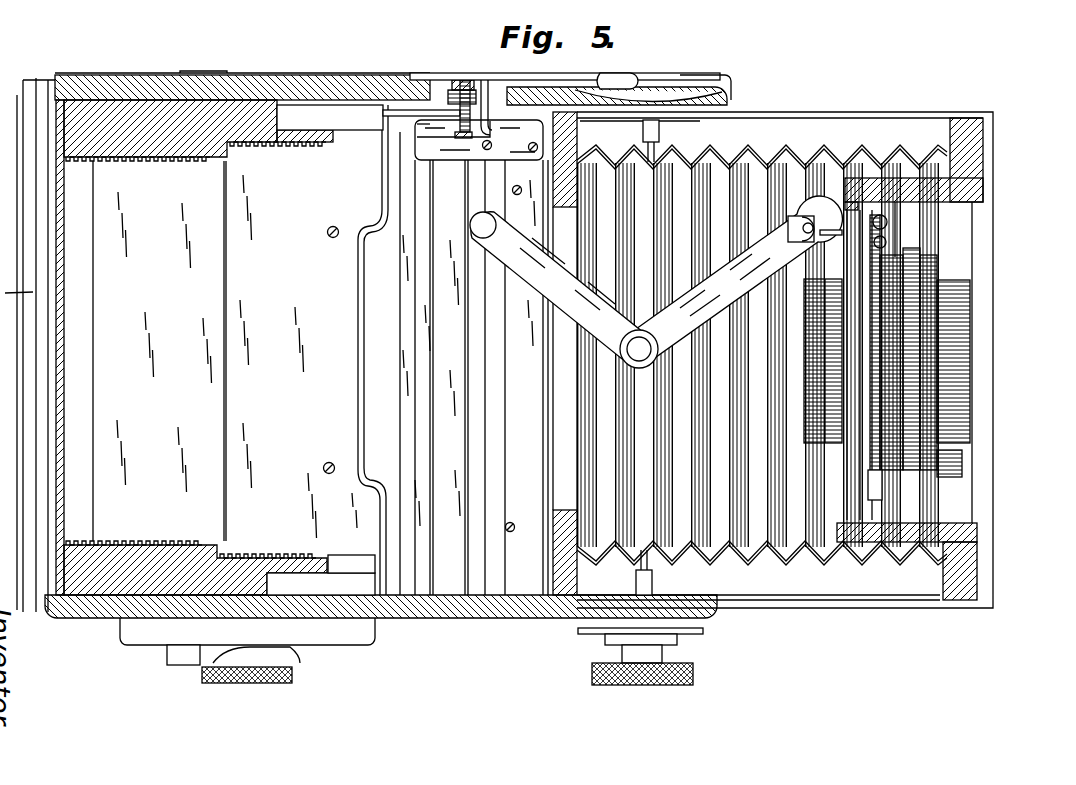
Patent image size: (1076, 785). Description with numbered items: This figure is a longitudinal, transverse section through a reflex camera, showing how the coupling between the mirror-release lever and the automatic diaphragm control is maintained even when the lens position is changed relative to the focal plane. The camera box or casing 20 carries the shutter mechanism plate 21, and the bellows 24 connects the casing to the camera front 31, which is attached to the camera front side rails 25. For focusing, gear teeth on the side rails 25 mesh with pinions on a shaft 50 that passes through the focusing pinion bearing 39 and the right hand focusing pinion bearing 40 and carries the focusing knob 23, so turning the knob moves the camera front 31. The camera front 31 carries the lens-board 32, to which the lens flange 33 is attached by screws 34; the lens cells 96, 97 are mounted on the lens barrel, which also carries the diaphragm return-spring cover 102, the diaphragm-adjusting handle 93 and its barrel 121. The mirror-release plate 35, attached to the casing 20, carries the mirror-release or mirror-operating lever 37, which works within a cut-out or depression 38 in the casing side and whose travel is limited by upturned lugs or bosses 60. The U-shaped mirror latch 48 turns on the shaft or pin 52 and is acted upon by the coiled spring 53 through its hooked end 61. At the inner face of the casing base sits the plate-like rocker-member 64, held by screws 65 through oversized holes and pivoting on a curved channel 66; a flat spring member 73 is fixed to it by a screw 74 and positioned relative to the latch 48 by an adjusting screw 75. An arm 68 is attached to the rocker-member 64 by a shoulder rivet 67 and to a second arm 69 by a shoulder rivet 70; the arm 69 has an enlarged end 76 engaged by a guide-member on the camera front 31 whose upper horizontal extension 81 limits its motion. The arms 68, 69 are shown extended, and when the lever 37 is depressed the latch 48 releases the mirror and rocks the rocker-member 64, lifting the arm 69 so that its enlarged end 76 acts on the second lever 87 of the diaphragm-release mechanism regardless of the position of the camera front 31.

The camera box or casing 20 is at (290, 82).
The shutter mechanism plate 21 is at (345, 637).
The focusing knob 23 is at (695, 676).
The bellows 24 is at (752, 568).
The camera front side rails 25 is at (884, 118).
The camera front 31 is at (990, 152).
The lens-board 32 is at (860, 516).
The lens flange 33 is at (897, 212).
The screws 34 is at (888, 240).
The mirror-release plate 35 is at (475, 90).
The mirror-release or mirror-operating lever 37 is at (625, 85).
The cut-out or depression 38 is at (650, 100).
The focusing pinion bearing 39 is at (700, 88).
The right hand focusing pinion bearing 40 is at (700, 633).
The mirror latch 48 is at (418, 137).
The shaft 50 is at (660, 152).
The shaft or pin 52 is at (440, 116).
The coiled spring 53 is at (455, 100).
The upturned lugs or bosses 60 is at (568, 88).
The hooked end 61 is at (500, 100).
The rocker-member 64 is at (490, 331).
The screws 65 is at (513, 188).
The curved channel 66 is at (505, 468).
The shoulder rivet 67 is at (483, 233).
The arm 68 is at (567, 300).
The second arm 69 is at (757, 285).
The shoulder rivet 70 is at (640, 352).
The flat spring member 73 is at (420, 152).
The screw 74 is at (478, 163).
The adjusting screw 75 is at (510, 137).
The enlarged end 76 is at (803, 213).
The upper horizontal extension 81 is at (795, 238).
The second lever 87 is at (828, 230).
The diaphragm-adjusting handle 93 is at (965, 462).
The lens cell 96 is at (960, 340).
The lens cell 97 is at (820, 375).
The diaphragm return-spring cover 102 is at (940, 275).
The barrel 121 is at (924, 480).